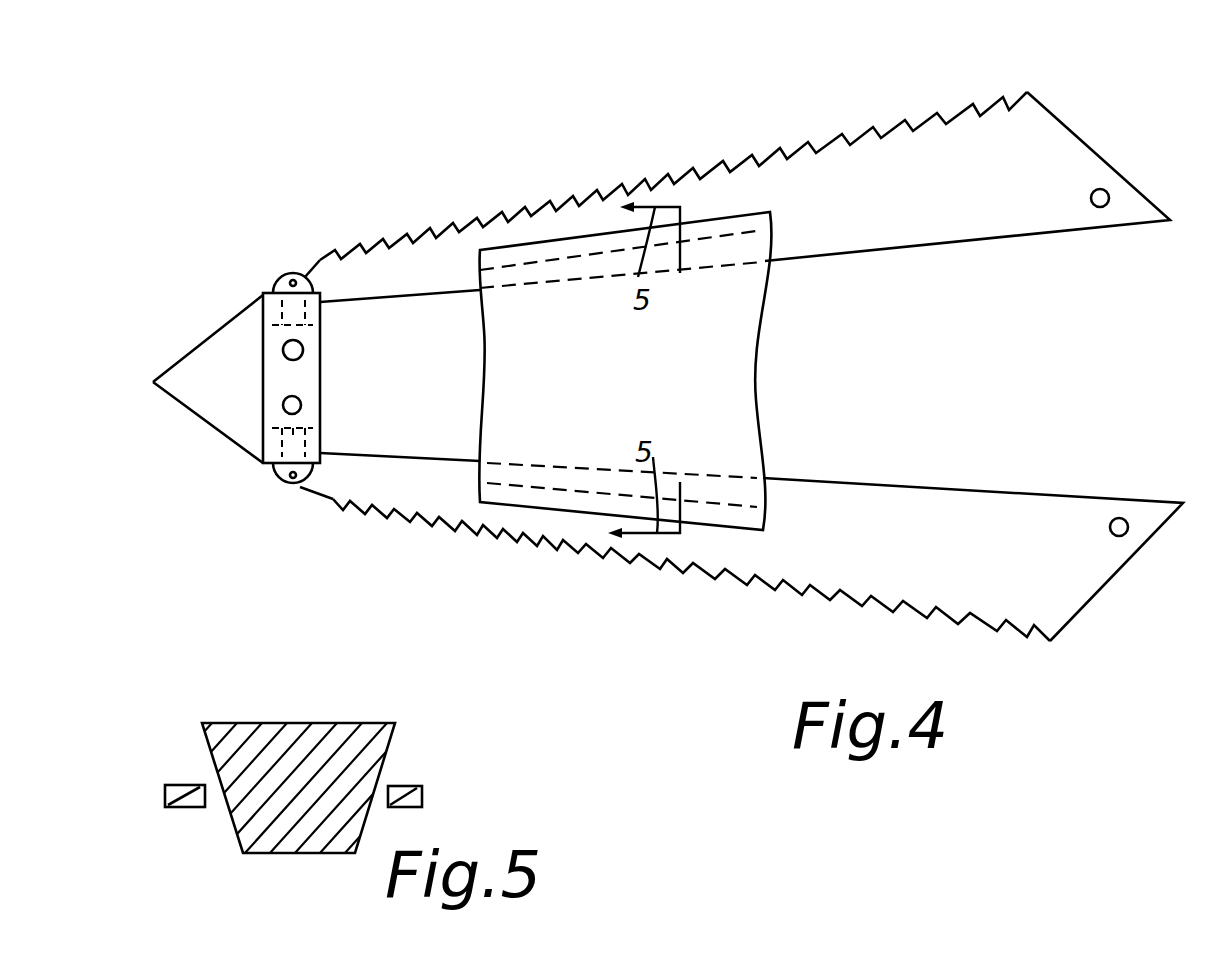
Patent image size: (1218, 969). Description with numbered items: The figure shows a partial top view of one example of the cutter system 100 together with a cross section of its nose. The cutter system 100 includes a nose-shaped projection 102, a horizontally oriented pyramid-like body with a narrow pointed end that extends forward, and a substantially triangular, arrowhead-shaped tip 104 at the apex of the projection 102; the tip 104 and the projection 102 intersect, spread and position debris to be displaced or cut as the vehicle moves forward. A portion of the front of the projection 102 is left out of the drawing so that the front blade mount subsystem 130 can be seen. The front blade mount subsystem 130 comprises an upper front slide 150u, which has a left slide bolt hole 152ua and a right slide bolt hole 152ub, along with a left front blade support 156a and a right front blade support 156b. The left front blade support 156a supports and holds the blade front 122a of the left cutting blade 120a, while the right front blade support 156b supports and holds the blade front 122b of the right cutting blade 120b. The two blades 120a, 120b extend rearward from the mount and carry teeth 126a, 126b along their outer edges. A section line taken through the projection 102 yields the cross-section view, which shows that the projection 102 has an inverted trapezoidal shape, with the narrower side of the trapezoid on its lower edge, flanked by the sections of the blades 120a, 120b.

In FIG. 4, the cutter system 100 is at (692, 130).
In FIG. 4, the nose-shaped projection 102 is at (758, 343).
In FIG. 5, the nose-shaped projection 102 is at (305, 723).
In FIG. 4, the tip 104 is at (153, 382).
In FIG. 4, the left cutting blade 120a is at (741, 544).
In FIG. 5, the left cutting blade 120a is at (181, 785).
In FIG. 4, the right cutting blade 120b is at (737, 176).
In FIG. 5, the right cutting blade 120b is at (411, 786).
In FIG. 4, the blade front 122a is at (430, 488).
In FIG. 4, the blade front 122b is at (440, 284).
In FIG. 4, the teeth 126a is at (831, 596).
In FIG. 4, the teeth 126b is at (906, 118).
In FIG. 4, the front blade mount subsystem 130 is at (340, 332).
In FIG. 4, the upper front slide 150u is at (317, 382).
In FIG. 4, the left slide bolt hole 152ua is at (302, 408).
In FIG. 4, the right slide bolt hole 152ub is at (285, 346).
In FIG. 4, the left front blade support 156a is at (276, 473).
In FIG. 4, the right front blade support 156b is at (276, 276).